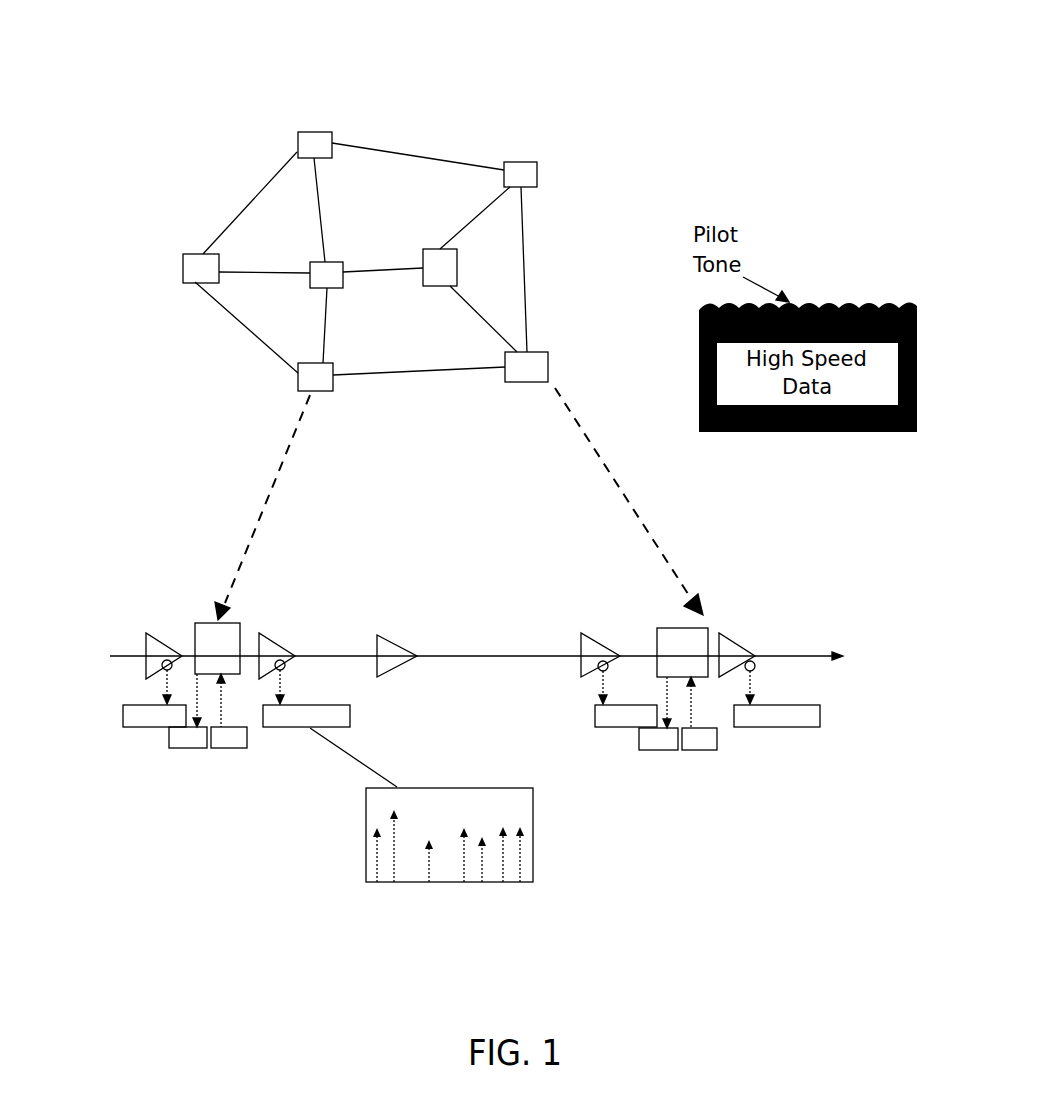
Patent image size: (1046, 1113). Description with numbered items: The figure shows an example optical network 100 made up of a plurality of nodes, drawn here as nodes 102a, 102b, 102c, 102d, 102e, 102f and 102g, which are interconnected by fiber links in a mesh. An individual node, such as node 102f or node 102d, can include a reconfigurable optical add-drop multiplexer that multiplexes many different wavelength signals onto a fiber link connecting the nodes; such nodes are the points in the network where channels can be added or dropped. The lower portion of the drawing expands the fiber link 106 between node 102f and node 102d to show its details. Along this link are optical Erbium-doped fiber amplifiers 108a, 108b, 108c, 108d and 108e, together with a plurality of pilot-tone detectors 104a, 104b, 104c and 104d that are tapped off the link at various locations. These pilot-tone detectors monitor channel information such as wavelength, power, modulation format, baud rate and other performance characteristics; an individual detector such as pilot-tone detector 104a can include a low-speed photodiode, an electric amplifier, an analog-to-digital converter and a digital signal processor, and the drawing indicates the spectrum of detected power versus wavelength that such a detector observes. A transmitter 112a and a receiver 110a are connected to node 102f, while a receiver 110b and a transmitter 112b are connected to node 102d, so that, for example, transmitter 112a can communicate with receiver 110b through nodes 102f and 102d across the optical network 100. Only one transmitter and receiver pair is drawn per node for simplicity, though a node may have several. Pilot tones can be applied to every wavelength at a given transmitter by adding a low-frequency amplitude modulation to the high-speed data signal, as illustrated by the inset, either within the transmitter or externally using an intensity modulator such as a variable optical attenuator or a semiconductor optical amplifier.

The optical network 100 is at (575, 100).
The node 102a is at (318, 132).
The node 102b is at (219, 262).
The node 102c is at (537, 170).
The node 102d is at (548, 362).
The node 102e is at (457, 268).
The node 102f is at (325, 391).
The node 102g is at (313, 288).
The pilot-tone detector 104a is at (132, 705).
The pilot-tone detector 104b is at (337, 705).
The pilot-tone detector 104c is at (598, 727).
The pilot-tone detector 104d is at (812, 727).
The fiber link 106 is at (426, 378).
The Erbium-doped fiber amplifier 108a is at (145, 648).
The Erbium-doped fiber amplifier 108b is at (273, 642).
The Erbium-doped fiber amplifier 108c is at (387, 640).
The Erbium-doped fiber amplifier 108d is at (592, 618).
The Erbium-doped fiber amplifier 108e is at (733, 638).
The receiver 110a is at (173, 748).
The receiver 110b is at (670, 750).
The transmitter 112a is at (242, 748).
The transmitter 112b is at (715, 750).